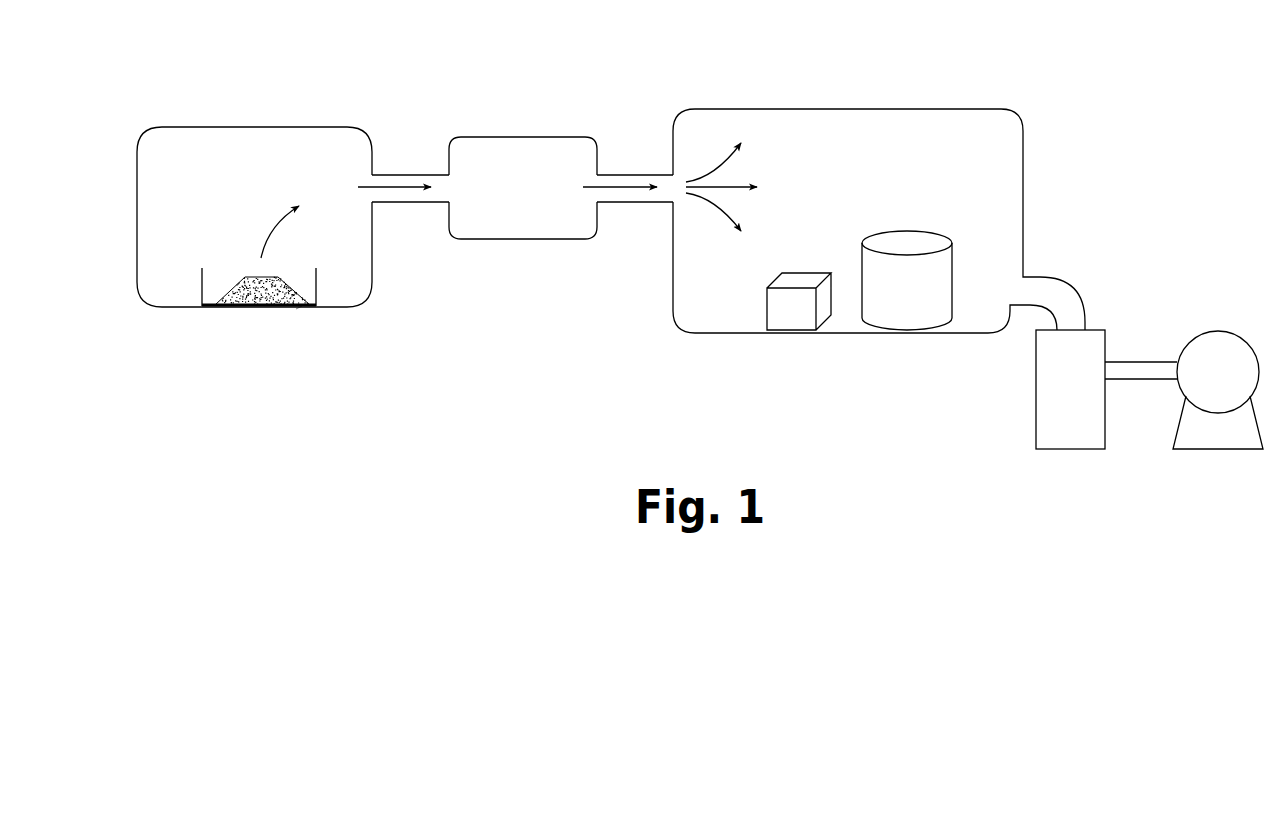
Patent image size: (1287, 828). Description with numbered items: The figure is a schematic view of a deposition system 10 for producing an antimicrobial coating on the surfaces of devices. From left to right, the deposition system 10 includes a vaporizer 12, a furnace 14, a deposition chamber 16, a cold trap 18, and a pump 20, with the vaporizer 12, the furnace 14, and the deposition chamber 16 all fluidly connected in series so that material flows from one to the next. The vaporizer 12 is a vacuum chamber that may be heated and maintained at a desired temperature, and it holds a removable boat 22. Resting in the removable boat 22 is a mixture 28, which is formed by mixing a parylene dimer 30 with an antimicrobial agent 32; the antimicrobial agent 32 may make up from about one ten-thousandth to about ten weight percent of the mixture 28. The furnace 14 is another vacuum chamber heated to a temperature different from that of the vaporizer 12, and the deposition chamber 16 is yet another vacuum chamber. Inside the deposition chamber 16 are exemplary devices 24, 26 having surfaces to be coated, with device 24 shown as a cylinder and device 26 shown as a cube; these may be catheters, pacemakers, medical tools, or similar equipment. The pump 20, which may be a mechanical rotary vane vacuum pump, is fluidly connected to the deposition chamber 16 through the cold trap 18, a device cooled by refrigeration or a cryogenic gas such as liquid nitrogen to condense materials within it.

The deposition system 10 is at (1099, 81).
The vaporizer 12 is at (256, 127).
The furnace 14 is at (522, 137).
The deposition chamber 16 is at (848, 109).
The cold trap 18 is at (1036, 389).
The pump 20 is at (1215, 331).
The removable boat 22 is at (203, 292).
The device 24 is at (862, 318).
The device 26 is at (768, 316).
The mixture 28 is at (297, 309).
The parylene dimer 30 is at (270, 305).
The antimicrobial agent 32 is at (241, 305).